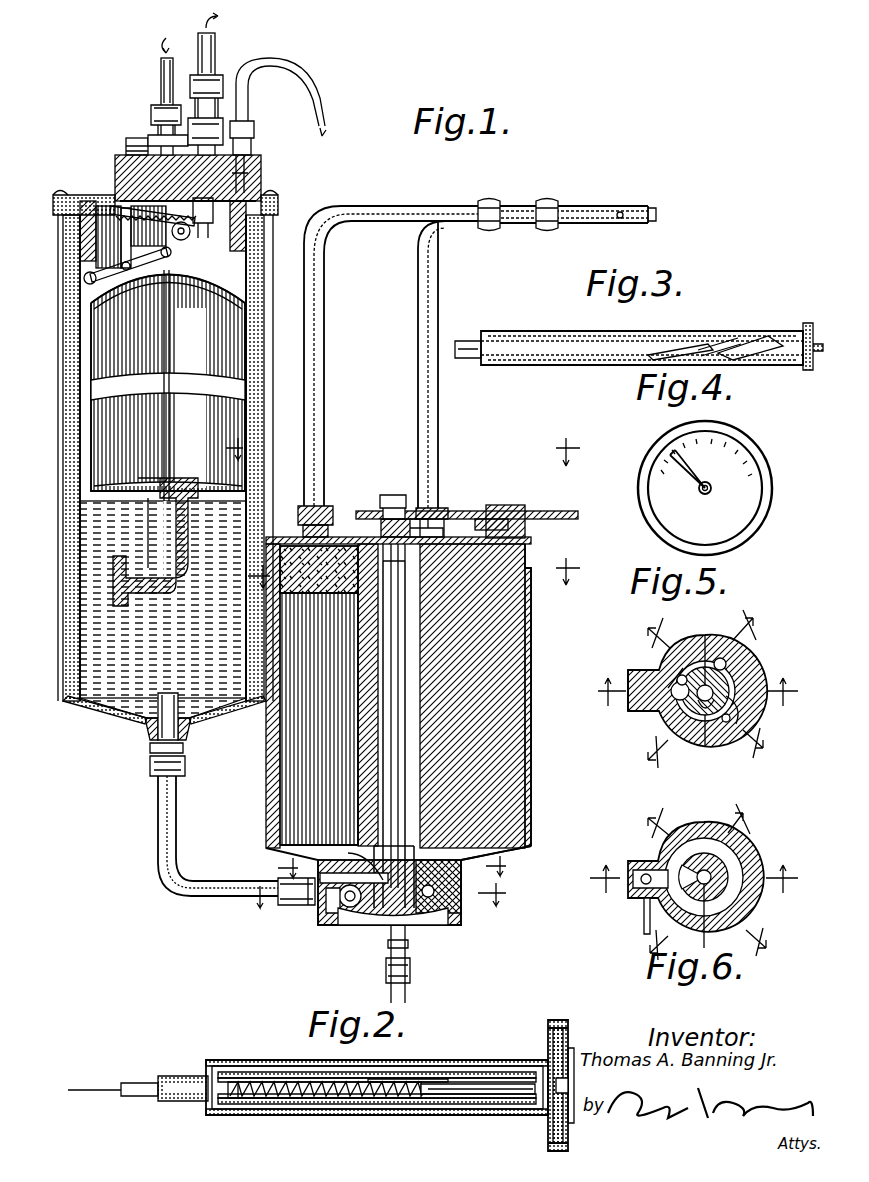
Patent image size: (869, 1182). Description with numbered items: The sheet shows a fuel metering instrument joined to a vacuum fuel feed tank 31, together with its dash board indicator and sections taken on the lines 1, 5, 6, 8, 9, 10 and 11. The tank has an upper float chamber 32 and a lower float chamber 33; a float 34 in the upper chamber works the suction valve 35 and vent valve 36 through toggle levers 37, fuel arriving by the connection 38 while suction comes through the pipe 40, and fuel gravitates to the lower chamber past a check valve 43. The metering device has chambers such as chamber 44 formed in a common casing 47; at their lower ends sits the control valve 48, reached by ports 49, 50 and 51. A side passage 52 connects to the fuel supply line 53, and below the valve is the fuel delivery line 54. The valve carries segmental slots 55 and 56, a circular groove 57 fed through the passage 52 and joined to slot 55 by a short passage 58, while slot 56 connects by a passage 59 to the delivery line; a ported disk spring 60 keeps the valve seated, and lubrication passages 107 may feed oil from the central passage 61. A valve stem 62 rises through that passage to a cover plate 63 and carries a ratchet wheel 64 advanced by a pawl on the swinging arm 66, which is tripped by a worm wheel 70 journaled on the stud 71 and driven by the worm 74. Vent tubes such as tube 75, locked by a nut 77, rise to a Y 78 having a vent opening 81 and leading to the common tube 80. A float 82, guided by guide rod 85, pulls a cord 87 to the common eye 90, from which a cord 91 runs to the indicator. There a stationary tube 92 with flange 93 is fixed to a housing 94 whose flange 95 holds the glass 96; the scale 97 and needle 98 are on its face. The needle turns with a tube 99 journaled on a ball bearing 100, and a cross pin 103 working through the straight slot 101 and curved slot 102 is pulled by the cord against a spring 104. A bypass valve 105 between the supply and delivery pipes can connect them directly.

In FIG. 1, the vacuum fuel feed tank 31 is at (253, 430).
In FIG. 1, the upper float chamber 32 is at (250, 408).
In FIG. 1, the lower float chamber 33 is at (120, 712).
In FIG. 1, the float 34 is at (237, 330).
In FIG. 1, the suction valve 35 is at (118, 205).
In FIG. 1, the vent valve 36 is at (240, 172).
In FIG. 1, the toggle levers 37 is at (183, 232).
In FIG. 1, the fuel supply connection 38 is at (152, 72).
In FIG. 1, the suction pipe 40 is at (207, 50).
In FIG. 1, the check valve 43 is at (118, 560).
In FIG. 1, the metering chamber 44 is at (300, 784).
In FIG. 1, the casing 47 is at (530, 676).
In FIG. 1, the control valve 48 is at (348, 899).
In FIG. 5, the control valve 48 is at (728, 672).
In FIG. 6, the control valve 48 is at (698, 916).
In FIG. 1, the chamber port 49 is at (265, 832).
In FIG. 5, the chamber port 49 is at (668, 692).
In FIG. 5, the chamber port 50 is at (730, 660).
In FIG. 5, the chamber port 51 is at (696, 740).
In FIG. 1, the side passage 52 is at (300, 898).
In FIG. 6, the side passage 52 is at (630, 862).
In FIG. 1, the fuel supply line 53 is at (148, 801).
In FIG. 1, the fuel delivery line 54 is at (398, 985).
In FIG. 1, the segmental slot 55 is at (340, 870).
In FIG. 5, the segmental slot 55 is at (690, 700).
In FIG. 5, the segmental slot 56 is at (740, 710).
In FIG. 1, the circular groove 57 is at (435, 883).
In FIG. 6, the circular groove 57 is at (740, 846).
In FIG. 5, the short passage 58 is at (640, 662).
In FIG. 5, the passage 59 is at (697, 627).
In FIG. 6, the passage 59 is at (722, 885).
In FIG. 1, the disk spring 60 is at (420, 912).
In FIG. 1, the central passage 61 is at (405, 713).
In FIG. 1, the valve stem 62 is at (400, 740).
In FIG. 1, the cover plate 63 is at (345, 503).
In FIG. 1, the ratchet wheel 64 is at (355, 503).
In FIG. 1, the arm 66 is at (436, 500).
In FIG. 1, the worm wheel 70 is at (518, 503).
In FIG. 1, the stud 71 is at (490, 511).
In FIG. 1, the worm 74 is at (318, 356).
In FIG. 1, the vent tube 75 is at (431, 410).
In FIG. 1, the nut 77 is at (296, 504).
In FIG. 1, the Y 78 is at (522, 188).
In FIG. 1, the common tube 80 is at (590, 208).
In FIG. 2, the common tube 80 is at (128, 1075).
In FIG. 1, the vent opening 81 is at (485, 195).
In FIG. 1, the float 82 is at (296, 524).
In FIG. 1, the guide rod 85 is at (310, 730).
In FIG. 1, the cord 87 is at (318, 438).
In FIG. 1, the eye 90 is at (613, 216).
In FIG. 1, the cord 91 is at (640, 206).
In FIG. 3, the cord 91 is at (443, 333).
In FIG. 2, the cord 91 is at (82, 1082).
In FIG. 3, the stationary tube 92 is at (543, 324).
In FIG. 2, the stationary tube 92 is at (280, 1062).
In FIG. 3, the flange 93 is at (800, 318).
In FIG. 2, the housing 94 is at (540, 1138).
In FIG. 2, the housing flange 95 is at (547, 1012).
In FIG. 2, the glass cover 96 is at (562, 1048).
In FIG. 4, the scale 97 is at (726, 482).
In FIG. 4, the needle 98 is at (690, 470).
In FIG. 2, the rotating tube 99 is at (462, 1070).
In FIG. 2, the ball bearing 100 is at (217, 1062).
In FIG. 3, the straight slot 101 is at (700, 336).
In FIG. 2, the straight slot 101 is at (434, 1086).
In FIG. 3, the curved slot 102 is at (718, 335).
In FIG. 3, the cross pin 103 is at (668, 338).
In FIG. 2, the cross pin 103 is at (420, 1070).
In FIG. 2, the spring 104 is at (318, 1092).
In FIG. 1, the bypass valve 105 is at (325, 905).
In FIG. 6, the bypass valve 105 is at (635, 910).
In FIG. 1, the lubrication passages 107 is at (505, 836).
In FIG. 5, the section line 1- 1 is at (700, 689).
In FIG. 6, the section line 1- 1 is at (696, 876).
In FIG. 1, the section line 5— 5 is at (392, 863).
In FIG. 1, the section line 6— 6 is at (385, 899).
In FIG. 1, the section line 8- 8 is at (401, 448).
In FIG. 1, the section line 9- 9 is at (412, 569).
In FIG. 5, the section line 10- 10 is at (710, 691).
In FIG. 6, the section line 10- 10 is at (711, 882).
In FIG. 5, the section line 11- 11 is at (703, 683).
In FIG. 6, the section line 11- 11 is at (700, 875).